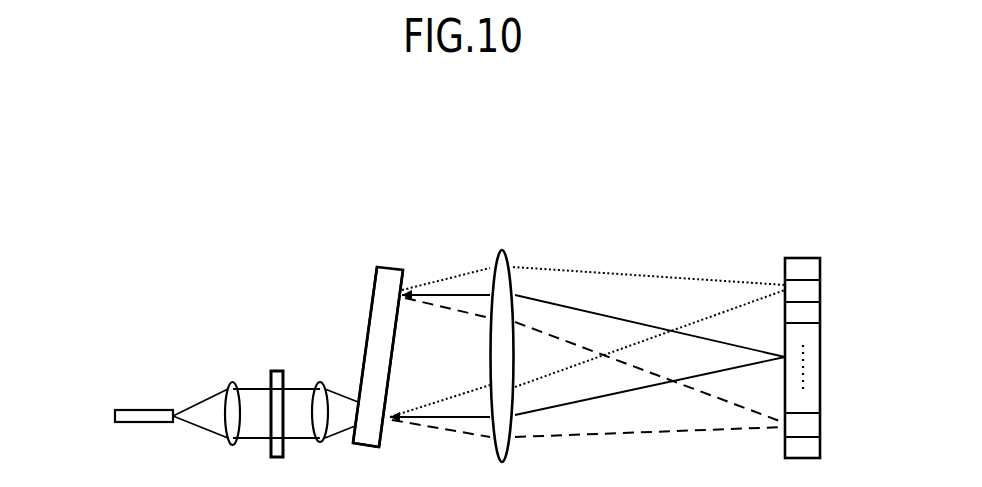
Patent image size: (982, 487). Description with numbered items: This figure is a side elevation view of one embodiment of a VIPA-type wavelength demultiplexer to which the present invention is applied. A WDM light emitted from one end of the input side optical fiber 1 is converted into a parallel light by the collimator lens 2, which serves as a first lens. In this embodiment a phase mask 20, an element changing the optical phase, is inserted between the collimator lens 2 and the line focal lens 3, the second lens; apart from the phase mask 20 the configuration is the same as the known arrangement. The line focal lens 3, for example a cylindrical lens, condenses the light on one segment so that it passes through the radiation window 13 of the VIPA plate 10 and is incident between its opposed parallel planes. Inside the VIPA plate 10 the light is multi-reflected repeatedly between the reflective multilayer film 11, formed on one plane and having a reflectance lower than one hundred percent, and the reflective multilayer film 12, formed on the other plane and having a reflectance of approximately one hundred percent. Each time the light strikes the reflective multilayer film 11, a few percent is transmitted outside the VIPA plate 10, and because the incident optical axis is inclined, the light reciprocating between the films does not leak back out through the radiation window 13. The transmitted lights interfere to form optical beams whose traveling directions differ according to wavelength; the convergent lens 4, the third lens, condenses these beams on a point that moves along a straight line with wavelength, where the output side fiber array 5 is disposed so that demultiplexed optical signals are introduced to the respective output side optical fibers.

The input side optical fiber 1 is at (140, 410).
The collimator lens 2 is at (232, 383).
The phase mask 20 is at (273, 368).
The line focal lens 3 is at (320, 382).
The VIPA plate 10 is at (379, 254).
The reflective multilayer film 11 is at (403, 283).
The reflective multilayer film 12 is at (372, 295).
The radiation window 13 is at (353, 428).
The convergent lens 4 is at (503, 252).
The fiber array 5 is at (802, 258).